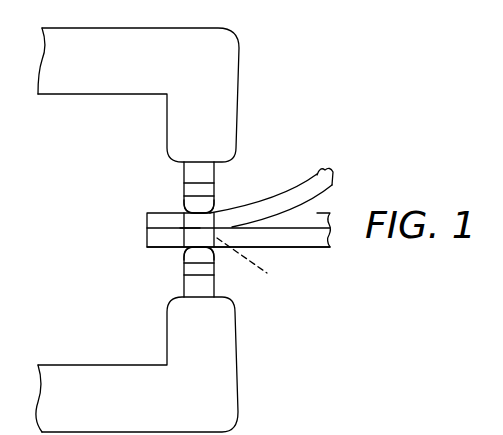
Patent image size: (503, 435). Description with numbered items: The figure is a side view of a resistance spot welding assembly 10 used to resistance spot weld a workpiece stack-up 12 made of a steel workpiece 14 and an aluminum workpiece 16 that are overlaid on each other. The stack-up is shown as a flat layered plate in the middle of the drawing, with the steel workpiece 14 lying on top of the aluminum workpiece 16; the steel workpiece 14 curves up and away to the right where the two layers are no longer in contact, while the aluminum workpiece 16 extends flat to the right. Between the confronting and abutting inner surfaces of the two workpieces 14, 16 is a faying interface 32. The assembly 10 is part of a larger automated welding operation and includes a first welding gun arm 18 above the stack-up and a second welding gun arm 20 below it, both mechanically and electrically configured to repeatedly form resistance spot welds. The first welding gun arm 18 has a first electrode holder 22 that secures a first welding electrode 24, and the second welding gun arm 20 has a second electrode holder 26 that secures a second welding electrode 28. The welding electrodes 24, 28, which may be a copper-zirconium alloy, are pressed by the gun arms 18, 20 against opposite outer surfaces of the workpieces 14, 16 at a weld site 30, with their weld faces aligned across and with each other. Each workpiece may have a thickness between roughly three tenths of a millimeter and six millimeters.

The resistance spot welding assembly 10 is at (333, 100).
The workpiece stack-up 12 is at (147, 228).
The steel workpiece 14 is at (302, 185).
The aluminum workpiece 16 is at (317, 240).
The first welding gun arm 18 is at (239, 63).
The second welding gun arm 20 is at (238, 349).
The first electrode holder 22 is at (195, 173).
The first welding electrode 24 is at (197, 207).
The second electrode holder 26 is at (197, 285).
The second welding electrode 28 is at (198, 255).
The weld site 30 is at (254, 269).
The faying interface 32 is at (190, 228).